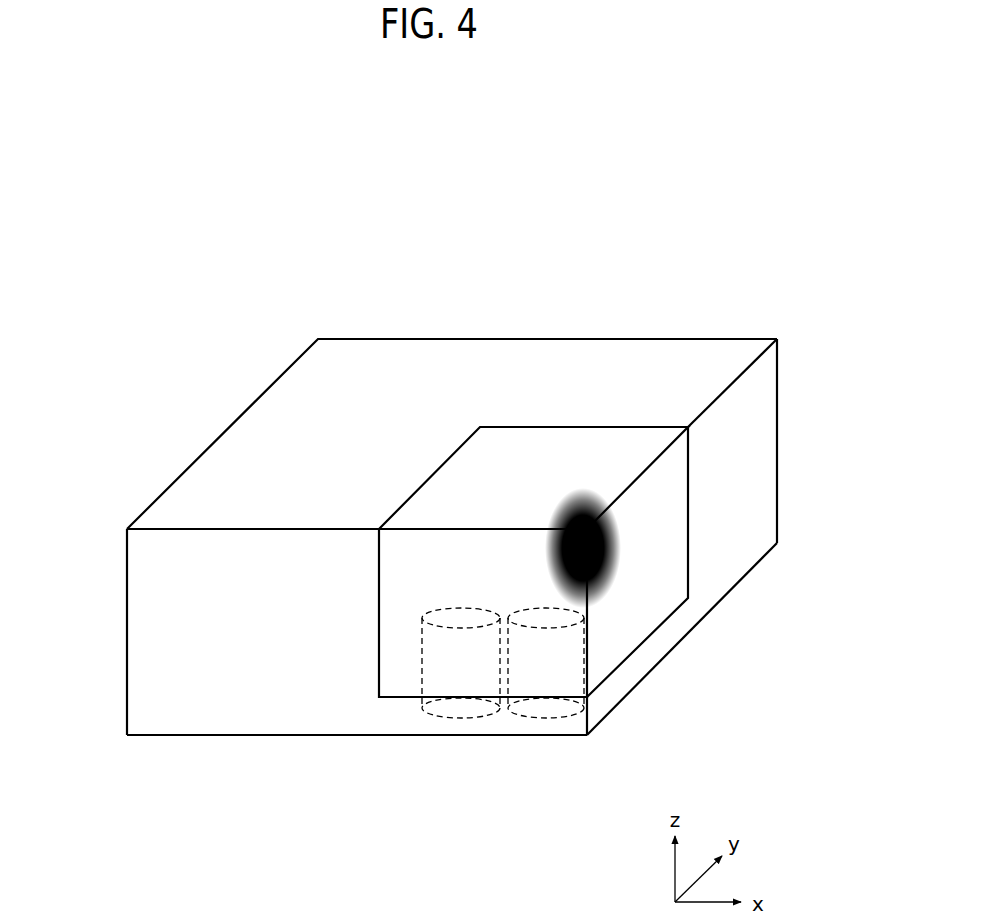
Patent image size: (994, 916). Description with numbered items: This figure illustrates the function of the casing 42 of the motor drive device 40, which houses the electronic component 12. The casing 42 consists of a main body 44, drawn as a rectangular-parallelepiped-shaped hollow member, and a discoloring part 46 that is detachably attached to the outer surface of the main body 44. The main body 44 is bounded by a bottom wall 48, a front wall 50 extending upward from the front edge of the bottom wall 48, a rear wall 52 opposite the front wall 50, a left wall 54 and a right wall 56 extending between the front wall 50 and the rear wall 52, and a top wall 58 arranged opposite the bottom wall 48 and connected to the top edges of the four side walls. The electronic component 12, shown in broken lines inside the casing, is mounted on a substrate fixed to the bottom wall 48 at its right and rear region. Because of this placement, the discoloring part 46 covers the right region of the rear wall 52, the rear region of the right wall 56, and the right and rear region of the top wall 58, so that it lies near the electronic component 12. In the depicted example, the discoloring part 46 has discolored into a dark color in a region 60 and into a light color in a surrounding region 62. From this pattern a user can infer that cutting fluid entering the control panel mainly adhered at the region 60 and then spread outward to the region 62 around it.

The motor drive device 40 is at (170, 182).
The casing 42 is at (242, 398).
The main body 44 is at (420, 337).
The discoloring part 46 is at (520, 448).
The bottom wall 48 is at (305, 737).
The front wall 50 is at (713, 338).
The rear wall 52 is at (225, 648).
The left wall 54 is at (127, 615).
The right wall 56 is at (747, 467).
The top wall 58 is at (368, 365).
The region 60 is at (582, 540).
The region 62 is at (618, 550).
The electronic component 12 is at (537, 685).